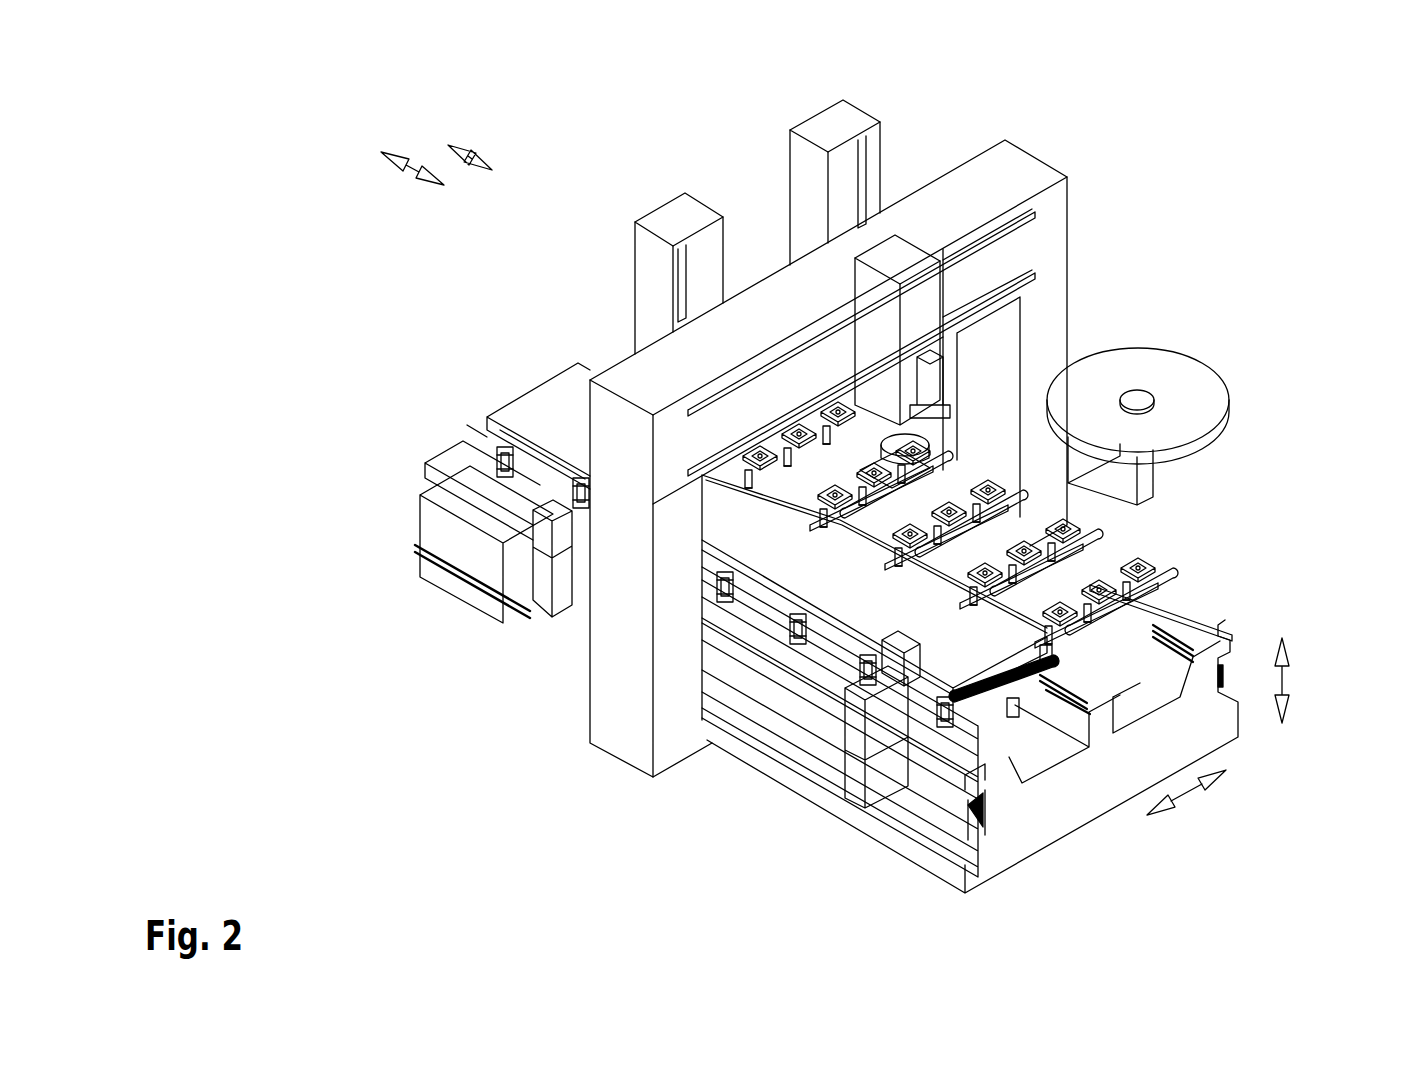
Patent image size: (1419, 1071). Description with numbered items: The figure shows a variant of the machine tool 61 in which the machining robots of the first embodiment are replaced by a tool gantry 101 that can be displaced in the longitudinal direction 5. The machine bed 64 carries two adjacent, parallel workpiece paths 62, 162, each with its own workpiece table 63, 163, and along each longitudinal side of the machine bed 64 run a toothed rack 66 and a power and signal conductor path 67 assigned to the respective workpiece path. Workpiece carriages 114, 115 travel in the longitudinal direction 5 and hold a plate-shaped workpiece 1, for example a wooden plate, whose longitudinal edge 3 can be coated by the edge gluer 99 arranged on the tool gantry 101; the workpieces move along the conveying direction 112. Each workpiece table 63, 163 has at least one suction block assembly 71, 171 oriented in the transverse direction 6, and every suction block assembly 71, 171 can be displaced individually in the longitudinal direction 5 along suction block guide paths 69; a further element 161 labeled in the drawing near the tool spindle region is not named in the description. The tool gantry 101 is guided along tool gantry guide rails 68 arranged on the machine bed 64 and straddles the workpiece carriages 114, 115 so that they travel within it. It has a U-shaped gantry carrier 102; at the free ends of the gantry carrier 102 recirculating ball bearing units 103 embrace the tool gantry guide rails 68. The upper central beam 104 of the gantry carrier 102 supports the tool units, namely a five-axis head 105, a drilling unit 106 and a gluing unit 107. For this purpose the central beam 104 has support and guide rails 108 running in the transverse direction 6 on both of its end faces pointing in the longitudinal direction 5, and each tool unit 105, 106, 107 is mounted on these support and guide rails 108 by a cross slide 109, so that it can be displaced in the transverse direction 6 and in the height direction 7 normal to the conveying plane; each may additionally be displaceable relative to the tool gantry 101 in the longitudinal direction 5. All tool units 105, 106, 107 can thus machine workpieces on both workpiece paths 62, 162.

The workpiece 1 is at (540, 408).
The longitudinal edge 3 is at (495, 427).
The longitudinal direction 5 is at (411, 163).
The transverse direction 6 is at (1188, 793).
The height direction 7 is at (1282, 681).
The machine tool 61 is at (595, 315).
The workpiece path 62 is at (467, 425).
The workpiece table 63 is at (990, 680).
The machine bed 64 is at (445, 532).
The toothed rack 66 is at (973, 780).
The power and signal conductor path 67 is at (973, 828).
The tool gantry guide rails 68 is at (418, 548).
The suction block guide paths 69 is at (1097, 713).
The suction block assembly 71 is at (803, 642).
The edge gluer 99 is at (1185, 418).
The tool gantry 101 is at (1055, 162).
The gantry carrier 102 is at (1050, 296).
The recirculating ball bearing units 103 is at (705, 718).
The central beam 104 is at (773, 297).
The 5-axis head 105 is at (662, 223).
The drilling unit 106 is at (808, 163).
The gluing unit 107 is at (953, 317).
The support and guide rails 108 is at (951, 258).
The cross slide 109 is at (853, 223).
The conveying direction 112 is at (467, 157).
The workpiece carriage 114 is at (547, 510).
The workpiece carriage 115 is at (857, 790).
The tool spindle unit 161 is at (970, 447).
The workpiece path 162 is at (1160, 612).
The workpiece table 163 is at (1075, 525).
The suction block assembly 171 is at (1163, 587).